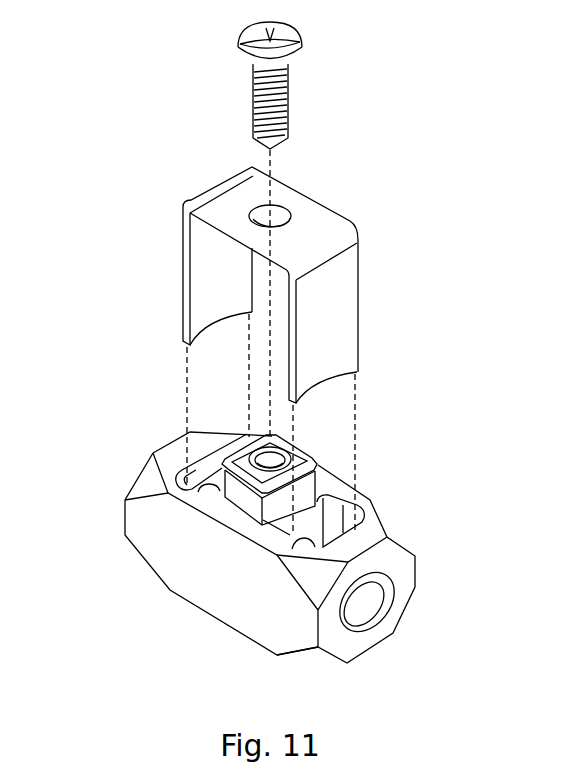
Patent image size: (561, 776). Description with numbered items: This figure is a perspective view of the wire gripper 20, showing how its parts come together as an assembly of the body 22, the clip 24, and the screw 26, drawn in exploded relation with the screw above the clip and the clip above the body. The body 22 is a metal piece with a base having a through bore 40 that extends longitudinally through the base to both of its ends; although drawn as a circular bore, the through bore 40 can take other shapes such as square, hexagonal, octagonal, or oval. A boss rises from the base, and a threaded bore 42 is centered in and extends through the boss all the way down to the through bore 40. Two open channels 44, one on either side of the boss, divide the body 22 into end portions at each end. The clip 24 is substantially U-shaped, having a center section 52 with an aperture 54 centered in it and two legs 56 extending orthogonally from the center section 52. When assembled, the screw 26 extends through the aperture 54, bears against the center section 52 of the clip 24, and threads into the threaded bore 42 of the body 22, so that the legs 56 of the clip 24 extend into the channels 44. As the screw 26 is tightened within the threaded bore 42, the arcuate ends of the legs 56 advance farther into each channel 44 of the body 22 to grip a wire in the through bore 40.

The wire gripper 20 is at (113, 208).
The body 22 is at (261, 526).
The clip 24 is at (318, 270).
The screw 26 is at (288, 105).
The through bore 40 is at (360, 597).
The threaded bore 42 is at (282, 453).
The open channels 44 is at (198, 475).
The center section 52 is at (316, 227).
The aperture 54 is at (278, 204).
The legs 56 is at (208, 284).